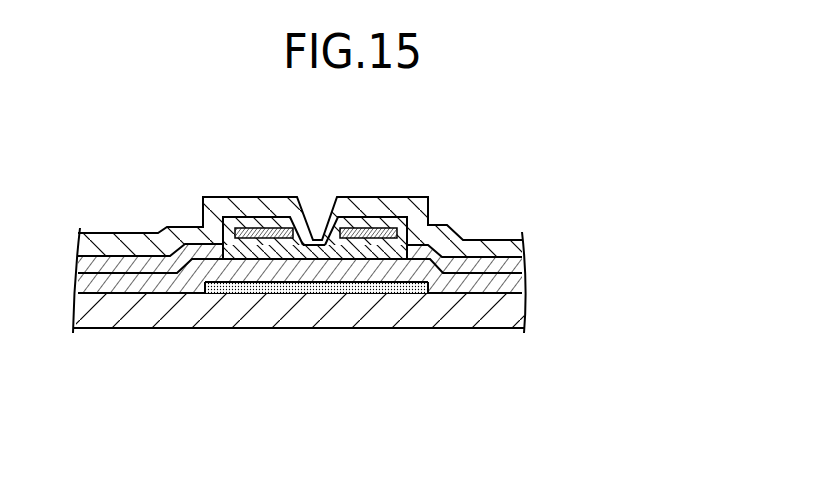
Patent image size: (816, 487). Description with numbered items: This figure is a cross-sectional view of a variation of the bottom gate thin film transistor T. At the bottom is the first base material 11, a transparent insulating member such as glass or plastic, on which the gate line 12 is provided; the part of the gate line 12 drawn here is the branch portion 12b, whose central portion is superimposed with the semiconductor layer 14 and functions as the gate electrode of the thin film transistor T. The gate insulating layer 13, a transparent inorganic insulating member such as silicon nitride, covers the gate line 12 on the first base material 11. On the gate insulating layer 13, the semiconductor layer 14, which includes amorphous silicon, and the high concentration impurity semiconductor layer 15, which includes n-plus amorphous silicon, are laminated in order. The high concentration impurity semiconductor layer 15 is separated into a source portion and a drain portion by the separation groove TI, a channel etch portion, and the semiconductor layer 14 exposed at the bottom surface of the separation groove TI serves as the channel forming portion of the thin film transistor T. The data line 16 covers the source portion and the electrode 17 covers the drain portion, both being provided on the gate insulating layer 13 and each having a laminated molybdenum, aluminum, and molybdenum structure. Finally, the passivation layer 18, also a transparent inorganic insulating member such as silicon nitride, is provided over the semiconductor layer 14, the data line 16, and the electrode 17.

The first base material 11 is at (515, 313).
The gate line 12 is at (316, 351).
The branch portion 12b is at (288, 291).
The gate insulating layer 13 is at (515, 282).
The semiconductor layer 14 is at (355, 252).
The high concentration impurity semiconductor layer 15 is at (272, 247).
The data line 16 is at (160, 265).
The electrode 17 is at (485, 263).
The passivation layer 18 is at (381, 205).
The separation groove TI is at (318, 272).
The thin film transistor T is at (527, 419).